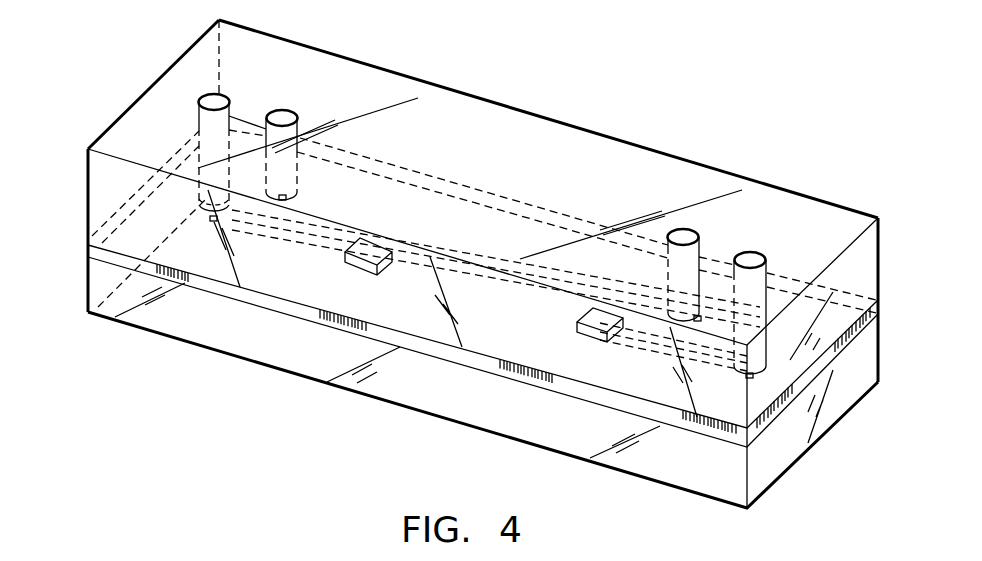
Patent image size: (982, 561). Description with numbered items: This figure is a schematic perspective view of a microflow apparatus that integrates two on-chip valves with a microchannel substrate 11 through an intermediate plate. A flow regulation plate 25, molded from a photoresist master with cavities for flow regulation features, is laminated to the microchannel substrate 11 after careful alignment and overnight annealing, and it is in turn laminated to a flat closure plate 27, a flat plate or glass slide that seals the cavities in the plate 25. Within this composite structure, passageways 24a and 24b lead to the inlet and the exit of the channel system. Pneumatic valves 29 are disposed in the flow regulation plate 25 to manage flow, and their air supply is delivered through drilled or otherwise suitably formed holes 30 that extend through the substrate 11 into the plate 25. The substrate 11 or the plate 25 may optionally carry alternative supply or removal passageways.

The microchannel substrate 11 is at (118, 118).
The passageway 24a is at (280, 117).
The passageway 24b is at (678, 240).
The flow regulation plate 25 is at (88, 245).
The flat closure plate 27 is at (768, 458).
The pneumatic valve 29 is at (362, 268).
The hole 30 is at (217, 97).